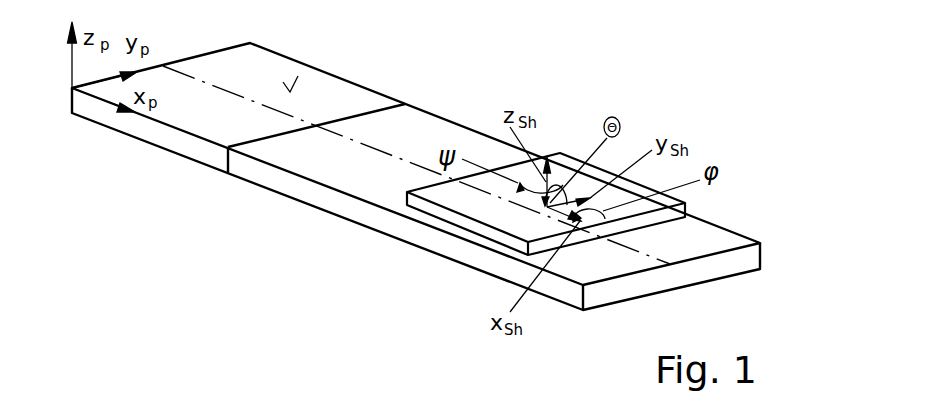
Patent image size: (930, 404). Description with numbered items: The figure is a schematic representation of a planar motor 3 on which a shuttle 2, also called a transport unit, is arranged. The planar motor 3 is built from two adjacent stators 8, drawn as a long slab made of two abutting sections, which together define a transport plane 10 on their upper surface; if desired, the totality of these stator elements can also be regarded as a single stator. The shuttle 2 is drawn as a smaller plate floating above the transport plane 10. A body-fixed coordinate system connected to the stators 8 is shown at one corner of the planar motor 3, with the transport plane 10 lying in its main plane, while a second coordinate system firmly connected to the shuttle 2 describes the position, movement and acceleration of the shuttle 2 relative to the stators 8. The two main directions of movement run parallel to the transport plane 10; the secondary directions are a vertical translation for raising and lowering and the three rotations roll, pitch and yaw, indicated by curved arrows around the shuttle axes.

The shuttle 2 is at (478, 202).
The planar motor 3 is at (193, 173).
The stators 8 is at (298, 61).
The transport plane 10 is at (298, 76).